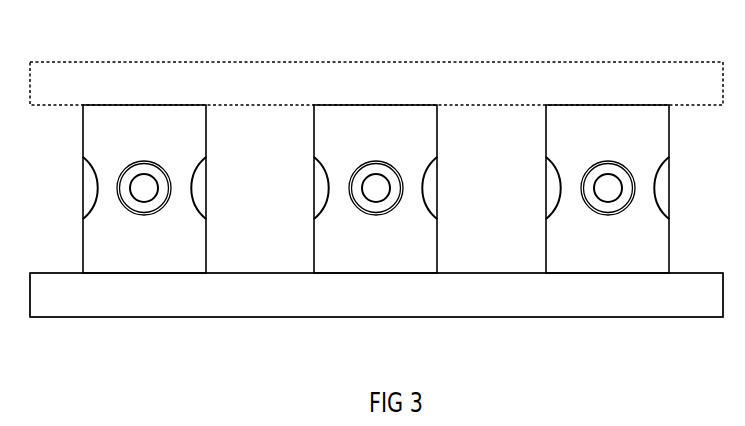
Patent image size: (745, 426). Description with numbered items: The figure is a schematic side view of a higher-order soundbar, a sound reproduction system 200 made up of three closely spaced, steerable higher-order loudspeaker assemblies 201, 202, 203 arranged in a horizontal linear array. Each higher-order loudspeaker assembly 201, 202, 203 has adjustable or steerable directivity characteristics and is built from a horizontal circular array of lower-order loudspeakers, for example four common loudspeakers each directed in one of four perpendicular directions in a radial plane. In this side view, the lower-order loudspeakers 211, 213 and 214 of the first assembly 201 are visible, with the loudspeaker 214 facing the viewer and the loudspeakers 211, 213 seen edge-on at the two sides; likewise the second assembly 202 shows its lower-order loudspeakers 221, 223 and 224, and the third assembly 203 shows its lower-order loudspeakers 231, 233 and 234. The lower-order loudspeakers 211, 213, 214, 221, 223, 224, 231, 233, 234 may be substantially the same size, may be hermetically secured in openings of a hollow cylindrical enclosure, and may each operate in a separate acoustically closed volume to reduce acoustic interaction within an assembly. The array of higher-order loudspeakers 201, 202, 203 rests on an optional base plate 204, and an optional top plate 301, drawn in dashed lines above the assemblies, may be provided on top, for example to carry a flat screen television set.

The sound reproduction system 200 is at (295, 142).
The higher-order loudspeaker assembly 201 is at (192, 261).
The higher-order loudspeaker assembly 202 is at (435, 255).
The higher-order loudspeaker assembly 203 is at (658, 253).
The base plate 204 is at (72, 317).
The lower-order loudspeaker 211 is at (83, 186).
The lower-order loudspeaker 213 is at (208, 167).
The lower-order loudspeaker 214 is at (144, 161).
The lower-order loudspeaker 221 is at (313, 197).
The lower-order loudspeaker 223 is at (438, 172).
The lower-order loudspeaker 224 is at (376, 161).
The lower-order loudspeaker 231 is at (545, 206).
The lower-order loudspeaker 233 is at (670, 175).
The lower-order loudspeaker 234 is at (608, 161).
The top plate 301 is at (77, 62).